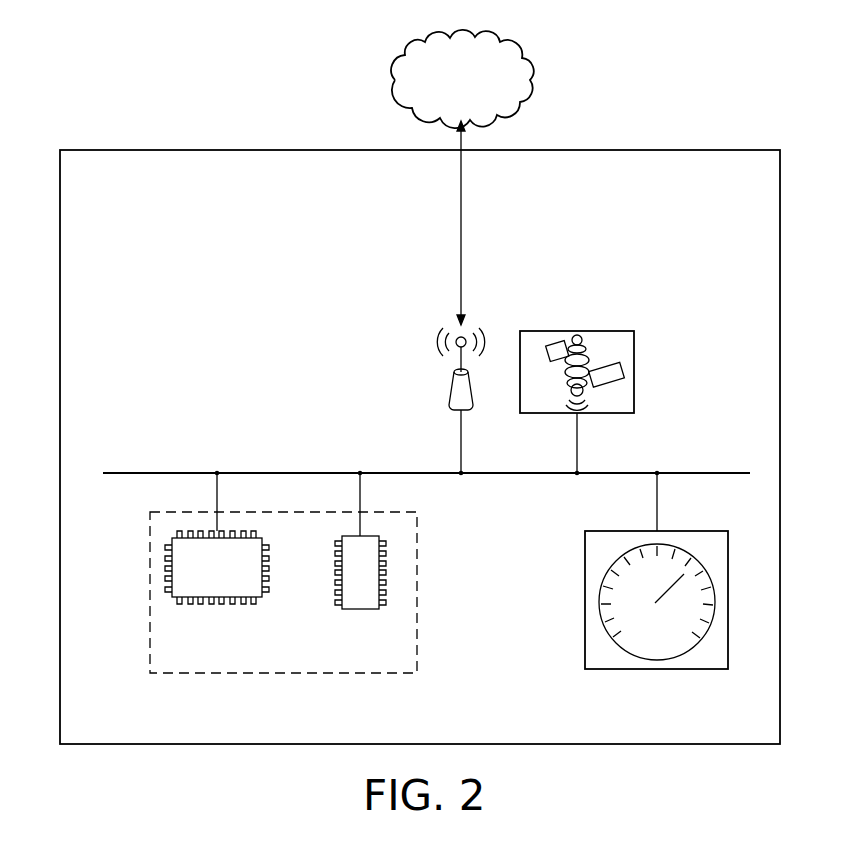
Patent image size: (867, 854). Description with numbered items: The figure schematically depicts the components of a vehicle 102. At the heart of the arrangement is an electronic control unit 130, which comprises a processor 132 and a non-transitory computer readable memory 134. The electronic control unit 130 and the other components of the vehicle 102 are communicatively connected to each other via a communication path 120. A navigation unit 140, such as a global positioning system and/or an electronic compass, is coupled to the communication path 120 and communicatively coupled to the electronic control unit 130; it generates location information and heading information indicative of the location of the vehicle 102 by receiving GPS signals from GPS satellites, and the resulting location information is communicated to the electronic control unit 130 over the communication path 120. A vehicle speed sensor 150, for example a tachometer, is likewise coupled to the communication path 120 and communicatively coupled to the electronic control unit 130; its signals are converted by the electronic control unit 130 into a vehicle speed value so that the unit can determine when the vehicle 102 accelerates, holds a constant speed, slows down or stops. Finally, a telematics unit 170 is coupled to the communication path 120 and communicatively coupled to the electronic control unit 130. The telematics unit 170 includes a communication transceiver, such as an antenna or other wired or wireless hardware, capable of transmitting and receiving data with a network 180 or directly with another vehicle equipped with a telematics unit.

The vehicle 102 is at (780, 265).
The communication path 120 is at (198, 472).
The electronic control unit 130 is at (417, 655).
The processor 132 is at (258, 597).
The non-transitory computer readable memory 134 is at (358, 609).
The navigation unit 140 is at (578, 331).
The vehicle speed sensor 150 is at (657, 669).
The telematics unit 170 is at (456, 379).
The network 180 is at (394, 80).